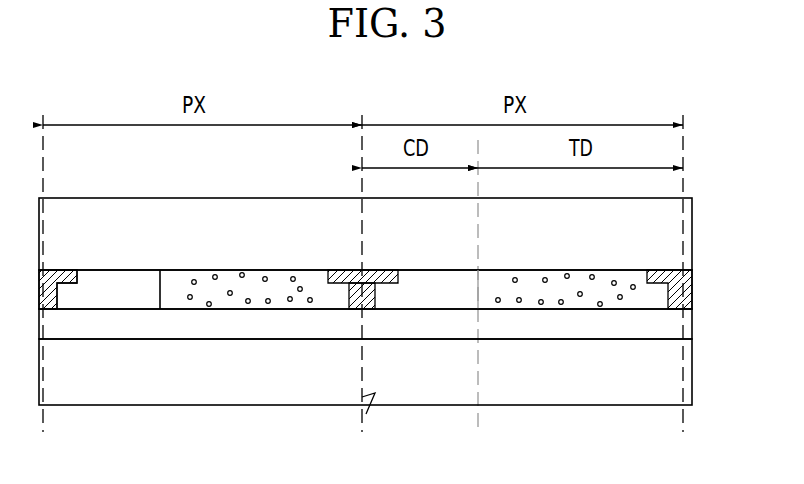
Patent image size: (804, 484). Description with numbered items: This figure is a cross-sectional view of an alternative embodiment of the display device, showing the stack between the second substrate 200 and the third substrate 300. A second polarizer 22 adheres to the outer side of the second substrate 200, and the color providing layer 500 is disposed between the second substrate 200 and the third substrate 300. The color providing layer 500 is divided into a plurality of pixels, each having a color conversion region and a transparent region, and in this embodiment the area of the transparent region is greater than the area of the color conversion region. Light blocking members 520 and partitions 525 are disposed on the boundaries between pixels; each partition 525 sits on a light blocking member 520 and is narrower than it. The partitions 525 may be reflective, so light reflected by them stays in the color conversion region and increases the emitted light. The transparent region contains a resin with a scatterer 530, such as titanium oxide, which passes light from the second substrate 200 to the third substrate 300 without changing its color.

The third substrate 300 is at (703, 198).
The color providing layer 500 is at (392, 365).
The light blocking member 520 is at (396, 283).
The partition 525 is at (350, 301).
The scatterer 530 is at (582, 296).
The second polarizer 22 is at (670, 325).
The second substrate 200 is at (703, 339).